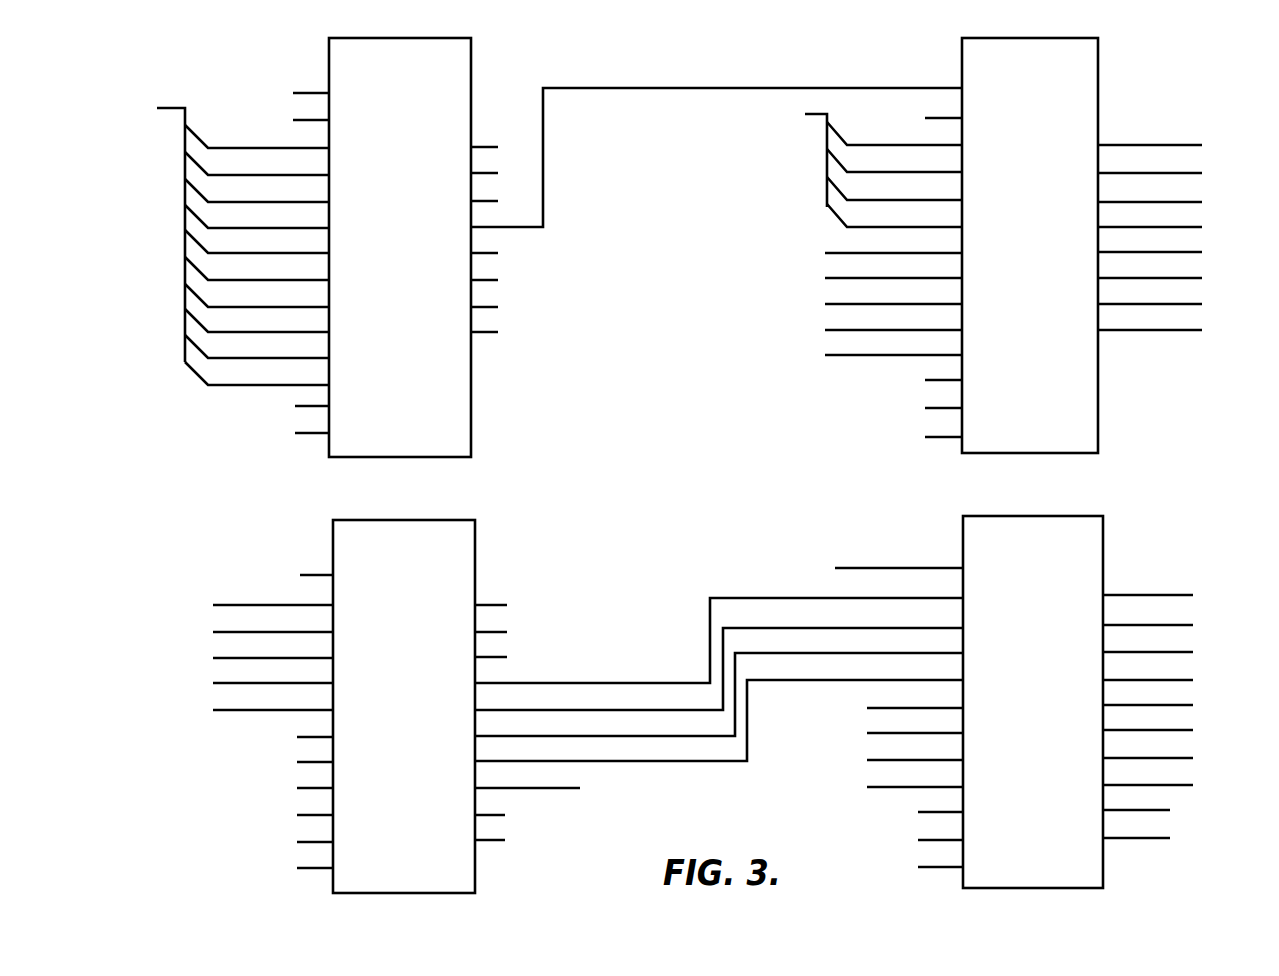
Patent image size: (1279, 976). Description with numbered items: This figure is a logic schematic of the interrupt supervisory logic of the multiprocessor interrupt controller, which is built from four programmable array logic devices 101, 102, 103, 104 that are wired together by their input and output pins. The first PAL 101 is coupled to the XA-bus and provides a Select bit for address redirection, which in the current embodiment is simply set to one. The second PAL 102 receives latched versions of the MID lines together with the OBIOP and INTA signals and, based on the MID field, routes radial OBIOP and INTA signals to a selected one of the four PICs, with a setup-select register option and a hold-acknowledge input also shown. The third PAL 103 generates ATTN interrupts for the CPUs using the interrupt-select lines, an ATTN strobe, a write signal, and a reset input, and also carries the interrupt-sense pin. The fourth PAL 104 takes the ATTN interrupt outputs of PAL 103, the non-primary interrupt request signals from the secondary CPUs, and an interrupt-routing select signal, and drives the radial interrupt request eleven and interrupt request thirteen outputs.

The programmable array logic device 101 is at (471, 412).
The programmable array logic device 102 is at (1098, 412).
The programmable array logic device 103 is at (475, 522).
The programmable array logic device 104 is at (1103, 530).